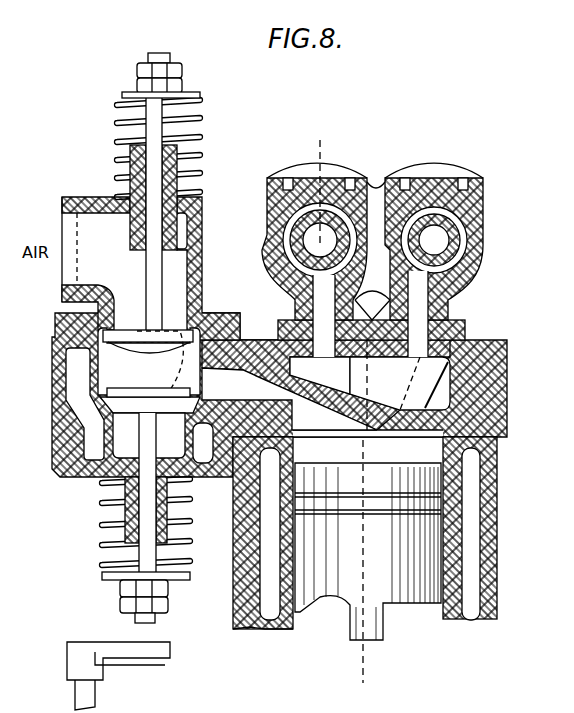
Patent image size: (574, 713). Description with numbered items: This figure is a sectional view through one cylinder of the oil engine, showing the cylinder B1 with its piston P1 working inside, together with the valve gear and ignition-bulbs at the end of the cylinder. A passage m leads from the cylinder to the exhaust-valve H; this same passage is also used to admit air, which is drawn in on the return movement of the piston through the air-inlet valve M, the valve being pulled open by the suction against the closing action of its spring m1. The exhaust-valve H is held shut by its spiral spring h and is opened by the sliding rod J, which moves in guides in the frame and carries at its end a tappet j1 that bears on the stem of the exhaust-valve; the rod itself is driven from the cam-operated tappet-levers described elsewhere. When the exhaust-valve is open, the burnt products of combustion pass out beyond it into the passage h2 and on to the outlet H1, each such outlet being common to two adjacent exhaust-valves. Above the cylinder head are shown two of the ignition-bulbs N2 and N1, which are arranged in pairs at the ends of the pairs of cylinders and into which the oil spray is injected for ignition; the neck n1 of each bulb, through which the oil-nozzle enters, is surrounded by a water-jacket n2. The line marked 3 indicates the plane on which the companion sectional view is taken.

The spring m1 is at (174, 149).
The air-inlet valve M is at (130, 342).
The exhaust-valve H is at (141, 396).
The outlet H1 is at (150, 415).
The passage h2 is at (149, 435).
The spiral spring h is at (188, 510).
The passage m is at (289, 399).
The cylinder B1 is at (365, 533).
The piston P1 is at (368, 551).
The ignition-bulb N2 is at (298, 241).
The ignition-bulb N1 is at (437, 241).
The neck n1 is at (500, 216).
The water-jacket n2 is at (370, 314).
The section line 3 3 is at (355, 405).
The sliding rod J is at (118, 676).
The tappet j1 is at (153, 692).